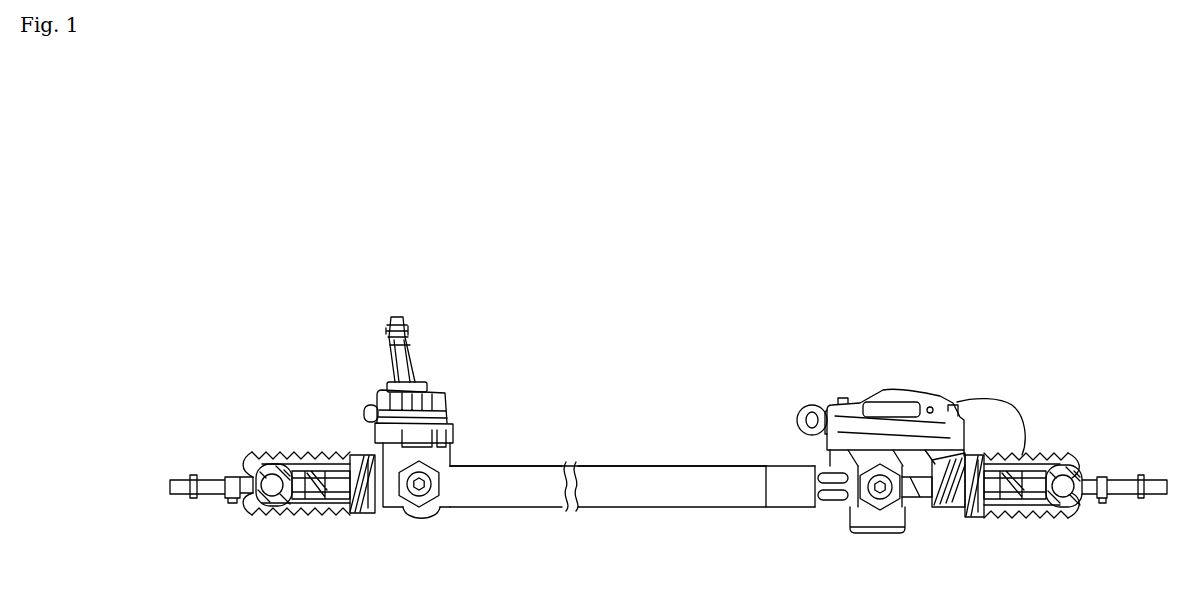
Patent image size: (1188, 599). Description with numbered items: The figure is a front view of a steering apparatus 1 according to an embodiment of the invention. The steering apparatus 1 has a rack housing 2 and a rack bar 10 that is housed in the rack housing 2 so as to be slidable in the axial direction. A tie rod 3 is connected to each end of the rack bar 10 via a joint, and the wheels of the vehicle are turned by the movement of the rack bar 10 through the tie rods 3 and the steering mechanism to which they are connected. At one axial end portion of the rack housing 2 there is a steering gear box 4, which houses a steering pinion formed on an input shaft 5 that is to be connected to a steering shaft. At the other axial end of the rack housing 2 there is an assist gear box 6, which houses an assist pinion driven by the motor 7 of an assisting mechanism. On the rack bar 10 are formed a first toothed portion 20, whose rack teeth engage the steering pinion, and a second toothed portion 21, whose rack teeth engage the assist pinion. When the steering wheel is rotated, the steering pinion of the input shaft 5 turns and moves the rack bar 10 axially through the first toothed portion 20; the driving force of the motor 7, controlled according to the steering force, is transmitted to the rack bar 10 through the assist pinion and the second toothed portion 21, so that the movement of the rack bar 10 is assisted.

The steering apparatus 1 is at (660, 458).
The rack housing 2 is at (640, 510).
The tie rod 3 is at (179, 478).
The steering gear box 4 is at (440, 453).
The input shaft 5 is at (395, 348).
The assist gear box 6 is at (868, 534).
The motor 7 is at (978, 398).
The rack bar 10 is at (938, 518).
The first toothed portion 20 is at (388, 512).
The second toothed portion 21 is at (952, 512).